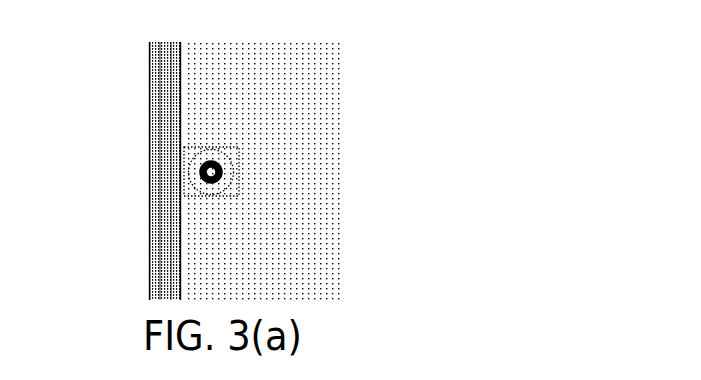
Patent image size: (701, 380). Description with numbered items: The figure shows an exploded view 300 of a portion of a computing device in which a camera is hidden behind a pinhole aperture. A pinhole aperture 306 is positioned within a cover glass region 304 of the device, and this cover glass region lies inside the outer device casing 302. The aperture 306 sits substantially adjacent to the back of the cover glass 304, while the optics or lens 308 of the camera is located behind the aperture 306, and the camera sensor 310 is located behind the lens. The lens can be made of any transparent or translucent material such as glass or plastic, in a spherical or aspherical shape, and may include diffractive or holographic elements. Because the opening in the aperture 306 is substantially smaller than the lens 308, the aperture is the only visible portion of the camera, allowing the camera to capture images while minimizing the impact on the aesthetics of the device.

The exploded view 300 is at (537, 105).
The outer device casing 302 is at (158, 238).
The cover glass region 304 is at (318, 263).
The pinhole aperture 306 is at (219, 162).
The lens 308 is at (223, 171).
The camera sensor 310 is at (240, 188).